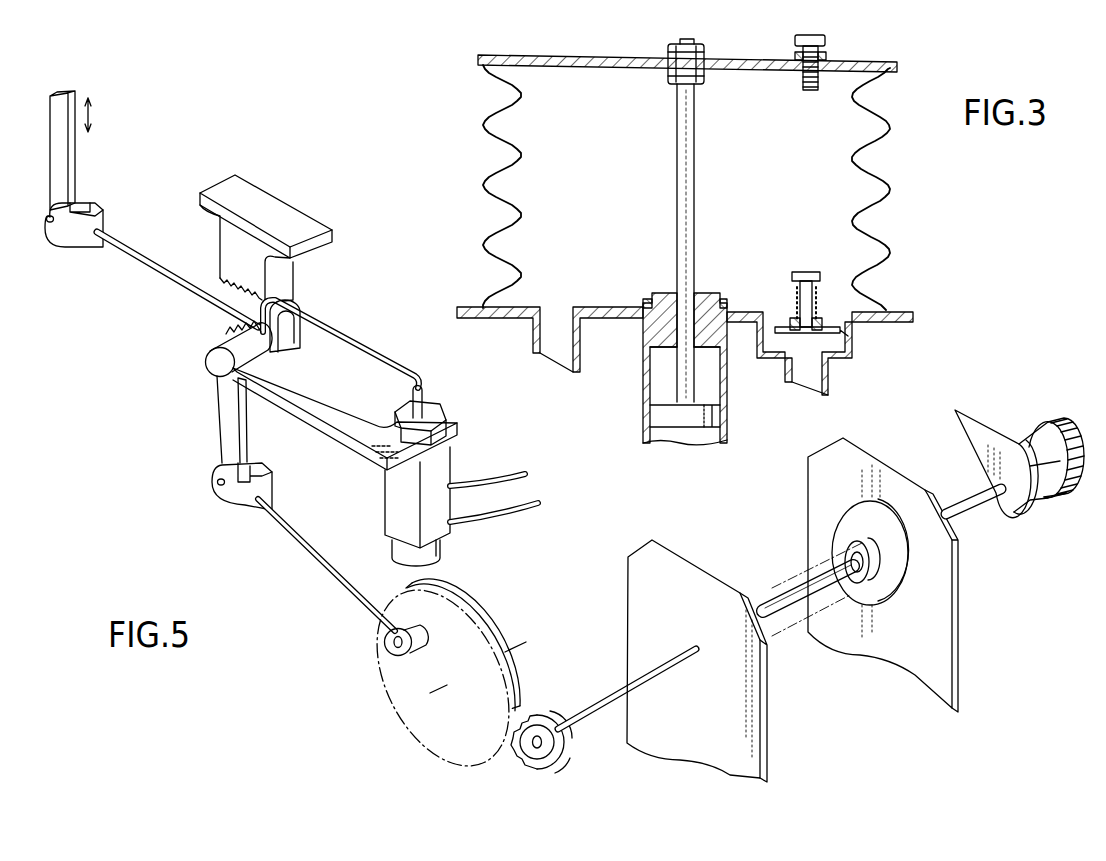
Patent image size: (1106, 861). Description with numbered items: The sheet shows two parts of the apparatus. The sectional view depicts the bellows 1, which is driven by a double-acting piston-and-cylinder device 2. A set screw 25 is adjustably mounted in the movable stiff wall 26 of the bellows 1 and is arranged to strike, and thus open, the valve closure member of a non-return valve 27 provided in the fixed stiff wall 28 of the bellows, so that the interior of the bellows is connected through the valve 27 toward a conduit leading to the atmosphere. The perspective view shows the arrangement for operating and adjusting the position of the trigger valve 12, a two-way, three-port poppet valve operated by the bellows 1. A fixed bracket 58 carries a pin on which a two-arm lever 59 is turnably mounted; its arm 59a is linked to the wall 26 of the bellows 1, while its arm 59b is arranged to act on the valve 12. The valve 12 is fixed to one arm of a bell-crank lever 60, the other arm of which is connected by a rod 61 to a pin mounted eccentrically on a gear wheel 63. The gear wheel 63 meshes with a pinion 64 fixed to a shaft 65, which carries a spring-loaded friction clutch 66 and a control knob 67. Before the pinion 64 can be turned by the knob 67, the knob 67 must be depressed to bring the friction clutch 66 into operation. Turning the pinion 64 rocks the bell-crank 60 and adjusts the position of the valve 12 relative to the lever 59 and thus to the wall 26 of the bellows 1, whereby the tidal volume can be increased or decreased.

In FIG. 3, the bellows 1 is at (888, 186).
In FIG. 3, the double-acting piston-and-cylinder device 2 is at (650, 415).
In FIG. 5, the trigger valve 12 is at (446, 473).
In FIG. 3, the set screw 25 is at (826, 42).
In FIG. 3, the movable stiff wall 26 is at (590, 64).
In FIG. 3, the non-return valve 27 is at (855, 338).
In FIG. 3, the fixed stiff wall 28 is at (601, 307).
In FIG. 5, the fixed bracket 58 is at (265, 200).
In FIG. 5, the two-arm lever 59 is at (335, 326).
In FIG. 5, the lever arm 59a is at (121, 242).
In FIG. 5, the lever arm 59b is at (406, 370).
In FIG. 5, the bell-crank lever 60 is at (217, 416).
In FIG. 5, the rod 61 is at (340, 581).
In FIG. 5, the gear wheel 63 is at (445, 624).
In FIG. 5, the pinion 64 is at (536, 702).
In FIG. 5, the shaft 65 is at (666, 676).
In FIG. 5, the spring-loaded friction clutch 66 is at (875, 585).
In FIG. 5, the control knob 67 is at (1037, 413).